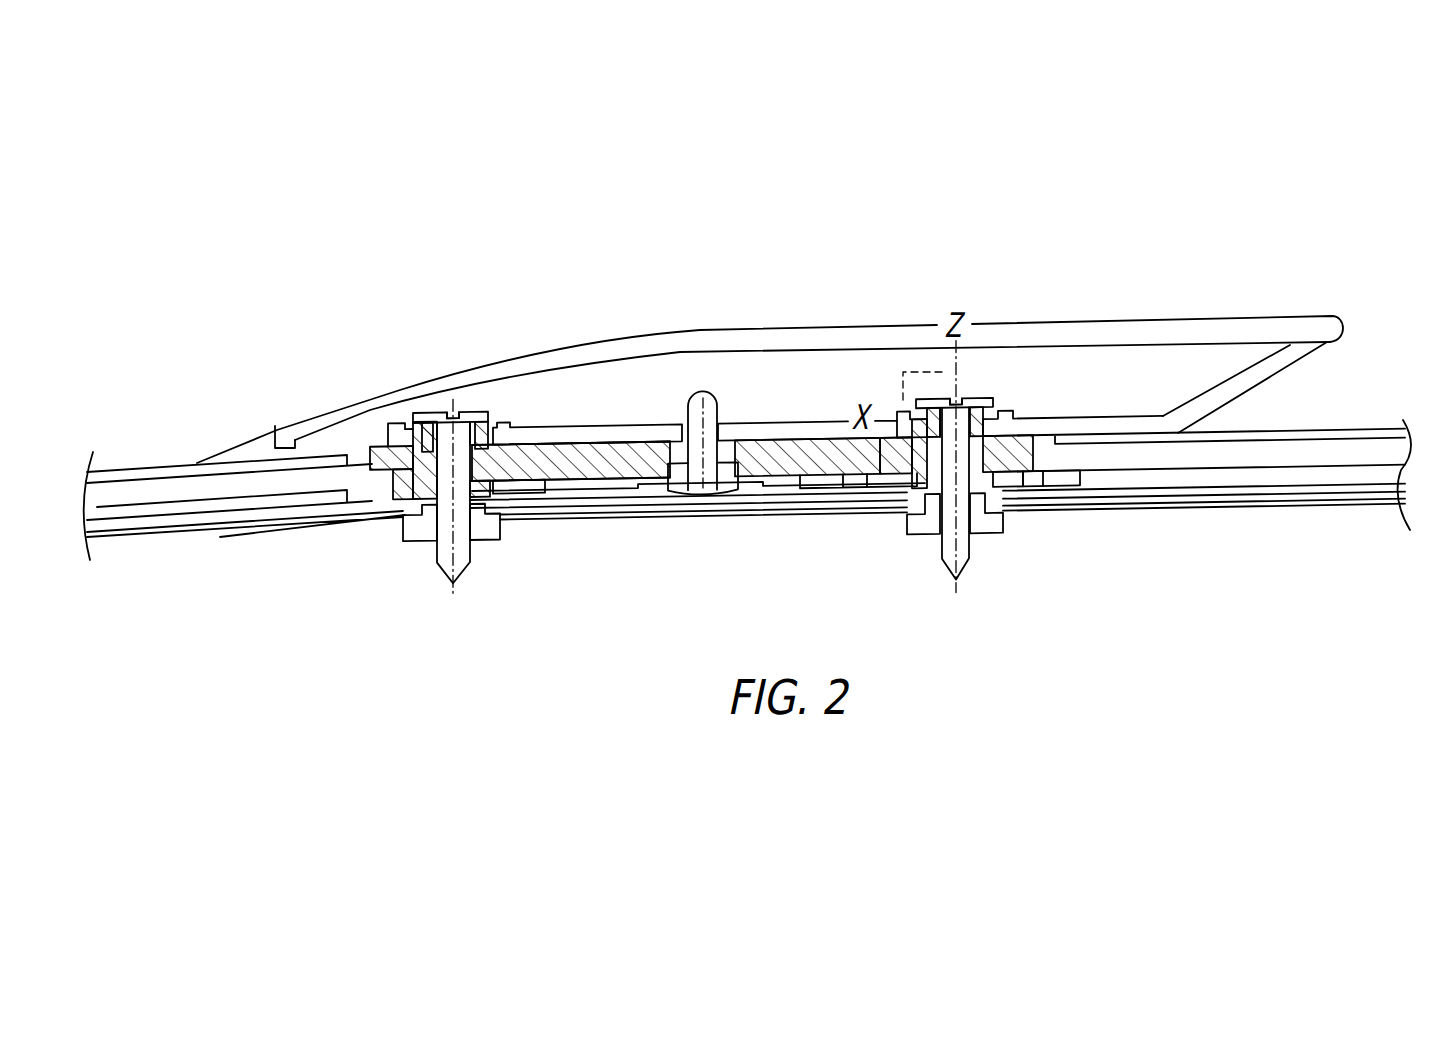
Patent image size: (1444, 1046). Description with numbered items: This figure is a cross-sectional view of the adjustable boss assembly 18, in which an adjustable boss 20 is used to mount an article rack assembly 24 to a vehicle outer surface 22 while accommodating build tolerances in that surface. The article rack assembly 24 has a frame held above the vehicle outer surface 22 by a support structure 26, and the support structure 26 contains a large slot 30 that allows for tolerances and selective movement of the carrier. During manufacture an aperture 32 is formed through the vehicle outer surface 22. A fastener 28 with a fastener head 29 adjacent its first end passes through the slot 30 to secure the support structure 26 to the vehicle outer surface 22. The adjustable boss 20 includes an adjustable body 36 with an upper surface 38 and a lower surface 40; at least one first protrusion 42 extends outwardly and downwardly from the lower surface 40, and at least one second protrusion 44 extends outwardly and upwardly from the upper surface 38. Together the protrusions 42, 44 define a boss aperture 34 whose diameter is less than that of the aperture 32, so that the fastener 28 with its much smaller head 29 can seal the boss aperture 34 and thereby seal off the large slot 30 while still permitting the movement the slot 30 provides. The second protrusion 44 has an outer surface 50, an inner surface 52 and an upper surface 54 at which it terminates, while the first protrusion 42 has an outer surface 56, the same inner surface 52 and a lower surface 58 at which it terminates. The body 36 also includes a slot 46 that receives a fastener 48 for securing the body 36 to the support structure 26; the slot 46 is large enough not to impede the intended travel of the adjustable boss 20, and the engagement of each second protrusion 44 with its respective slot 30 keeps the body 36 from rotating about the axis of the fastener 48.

The adjustable boss assembly 18 is at (1377, 140).
The adjustable boss 20 is at (611, 462).
The vehicle outer surface 22 is at (161, 543).
The article rack assembly 24 is at (1199, 312).
The support structure 26 is at (781, 341).
The fastener 28 is at (437, 570).
The fastener head 29 is at (476, 420).
The slot 30 is at (395, 482).
The aperture 32 is at (490, 512).
The boss aperture 34 is at (478, 412).
The adjustable body 36 is at (804, 457).
The upper surface 38 is at (631, 440).
The lower surface 40 is at (816, 492).
The first protrusion 42 is at (410, 504).
The second protrusion 44 is at (413, 438).
The slot 46 is at (678, 479).
The fastener 48 is at (698, 480).
The outer surface 50 is at (508, 433).
The inner surface 52 is at (452, 410).
The upper surface 54 is at (484, 417).
The outer surface 56 is at (498, 492).
The lower surface 58 is at (469, 502).